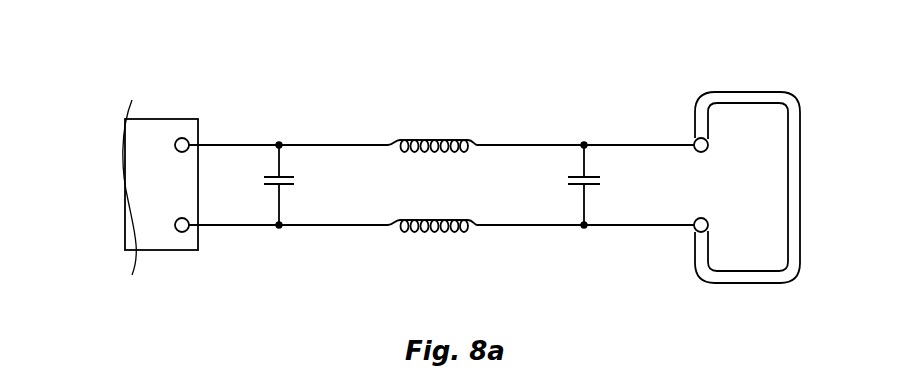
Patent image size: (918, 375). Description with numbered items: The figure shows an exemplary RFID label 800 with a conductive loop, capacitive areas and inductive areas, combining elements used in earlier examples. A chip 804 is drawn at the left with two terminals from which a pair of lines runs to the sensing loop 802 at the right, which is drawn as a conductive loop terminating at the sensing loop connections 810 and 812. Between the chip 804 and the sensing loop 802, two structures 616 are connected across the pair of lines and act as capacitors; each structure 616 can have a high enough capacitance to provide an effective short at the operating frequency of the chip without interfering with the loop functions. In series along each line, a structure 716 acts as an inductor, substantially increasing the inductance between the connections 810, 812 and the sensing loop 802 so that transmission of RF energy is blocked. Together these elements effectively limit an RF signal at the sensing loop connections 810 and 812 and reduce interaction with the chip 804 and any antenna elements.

The circuit arrangement 800 is at (115, 56).
The sensing loop 802 is at (792, 131).
The chip 804 is at (145, 188).
The sensing loop connection 810 is at (178, 138).
The sensing loop connection 812 is at (182, 232).
The structure acting as a capacitor 616 is at (267, 174).
The structure acting as an inductor 716 is at (432, 140).